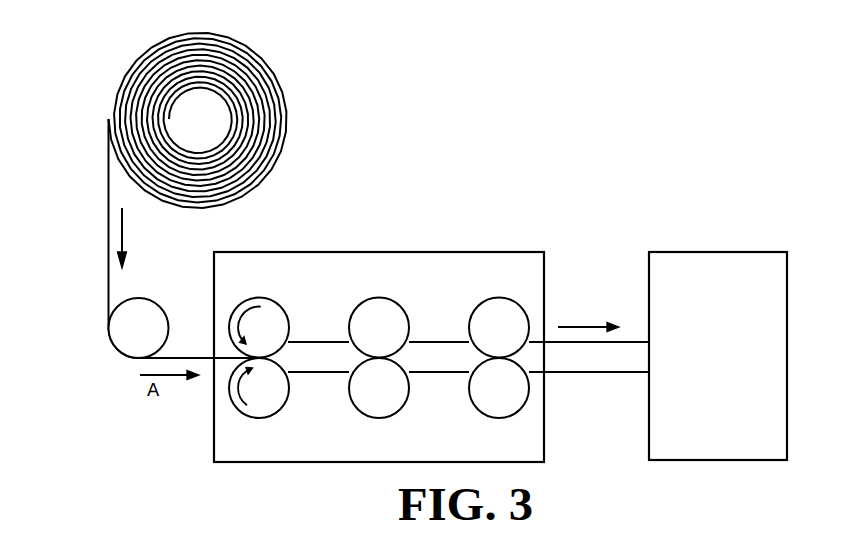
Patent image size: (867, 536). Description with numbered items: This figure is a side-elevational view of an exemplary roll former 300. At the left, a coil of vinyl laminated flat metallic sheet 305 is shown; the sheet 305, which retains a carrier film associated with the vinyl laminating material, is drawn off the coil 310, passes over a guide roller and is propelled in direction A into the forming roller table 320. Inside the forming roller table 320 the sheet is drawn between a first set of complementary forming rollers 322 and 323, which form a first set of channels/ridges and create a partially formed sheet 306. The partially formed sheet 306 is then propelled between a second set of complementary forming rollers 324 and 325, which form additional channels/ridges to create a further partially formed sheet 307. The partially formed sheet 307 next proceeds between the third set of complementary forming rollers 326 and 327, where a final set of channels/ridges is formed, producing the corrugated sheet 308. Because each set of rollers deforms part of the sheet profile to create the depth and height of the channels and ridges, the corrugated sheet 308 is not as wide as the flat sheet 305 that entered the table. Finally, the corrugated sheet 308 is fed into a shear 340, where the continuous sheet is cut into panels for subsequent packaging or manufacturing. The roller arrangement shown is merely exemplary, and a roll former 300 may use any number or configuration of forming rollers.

The roll former 300 is at (512, 46).
The vinyl laminated flat metallic sheet 305 is at (108, 226).
The partially formed sheet 306 is at (325, 373).
The partially formed sheet 307 is at (450, 373).
The corrugated sheet 308 is at (607, 373).
The coil of metal strip 310 is at (245, 42).
The forming roller table 320 is at (425, 252).
The first forming roller 322 is at (268, 330).
The first forming roller 323 is at (273, 395).
The second forming roller 324 is at (388, 328).
The second forming roller 325 is at (392, 393).
The third top forming roller 326 is at (510, 328).
The third forming roller 327 is at (483, 393).
The shear 340 is at (704, 252).